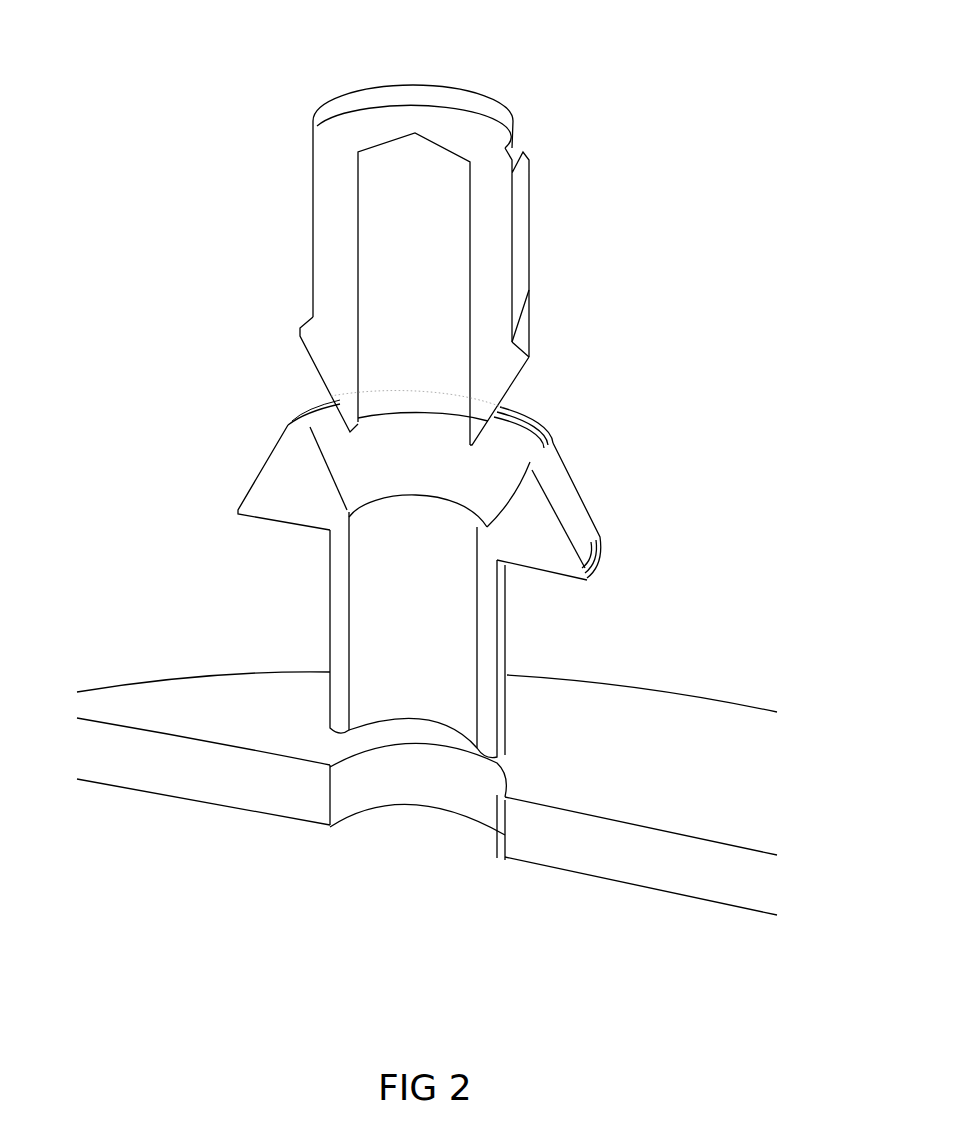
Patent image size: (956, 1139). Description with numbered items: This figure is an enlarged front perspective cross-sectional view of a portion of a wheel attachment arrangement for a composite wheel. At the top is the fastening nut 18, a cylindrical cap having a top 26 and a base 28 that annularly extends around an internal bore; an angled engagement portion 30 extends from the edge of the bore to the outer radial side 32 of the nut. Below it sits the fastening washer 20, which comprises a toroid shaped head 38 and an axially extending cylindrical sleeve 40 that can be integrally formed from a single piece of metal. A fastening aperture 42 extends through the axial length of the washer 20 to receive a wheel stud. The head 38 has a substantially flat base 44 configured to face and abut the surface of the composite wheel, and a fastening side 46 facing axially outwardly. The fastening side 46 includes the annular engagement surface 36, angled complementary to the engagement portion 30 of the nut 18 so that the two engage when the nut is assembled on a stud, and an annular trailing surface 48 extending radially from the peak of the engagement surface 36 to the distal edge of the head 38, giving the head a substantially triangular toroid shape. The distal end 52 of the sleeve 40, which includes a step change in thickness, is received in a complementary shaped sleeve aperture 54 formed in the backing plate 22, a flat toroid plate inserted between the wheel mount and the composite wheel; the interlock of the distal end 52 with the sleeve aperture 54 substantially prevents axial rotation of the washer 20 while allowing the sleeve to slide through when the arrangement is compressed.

The fastening nut 18 is at (487, 226).
The fastening washer 20 is at (458, 619).
The backing plate 22 is at (446, 788).
The top 26 is at (428, 100).
The base 28 is at (343, 437).
The engagement portion 30 is at (523, 373).
The outer radial side 32 is at (552, 210).
The engagement surface 36 is at (505, 442).
The head 38 is at (232, 483).
The sleeve 40 is at (340, 628).
The fastening aperture 42 is at (397, 580).
The base 44 is at (540, 582).
The fastening side 46 is at (574, 445).
The trailing surface 48 is at (563, 483).
The distal end 52 is at (345, 732).
The sleeve aperture 54 is at (392, 836).